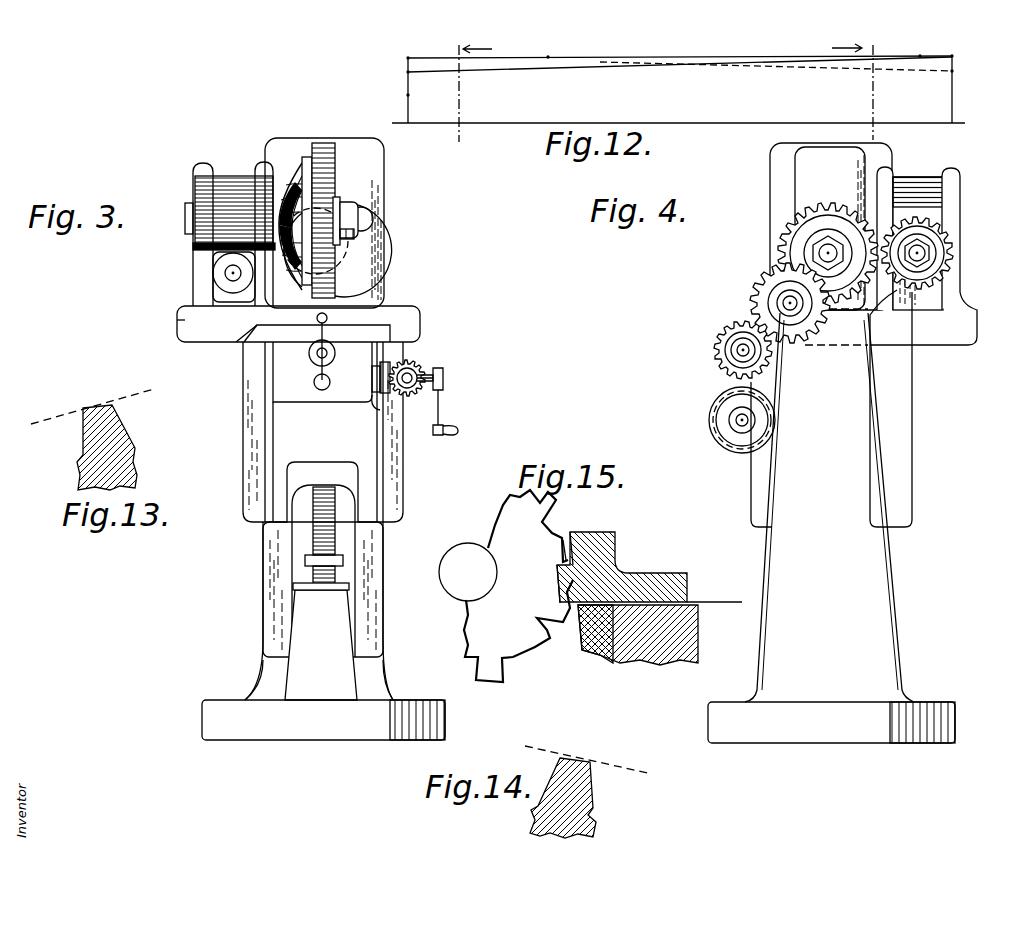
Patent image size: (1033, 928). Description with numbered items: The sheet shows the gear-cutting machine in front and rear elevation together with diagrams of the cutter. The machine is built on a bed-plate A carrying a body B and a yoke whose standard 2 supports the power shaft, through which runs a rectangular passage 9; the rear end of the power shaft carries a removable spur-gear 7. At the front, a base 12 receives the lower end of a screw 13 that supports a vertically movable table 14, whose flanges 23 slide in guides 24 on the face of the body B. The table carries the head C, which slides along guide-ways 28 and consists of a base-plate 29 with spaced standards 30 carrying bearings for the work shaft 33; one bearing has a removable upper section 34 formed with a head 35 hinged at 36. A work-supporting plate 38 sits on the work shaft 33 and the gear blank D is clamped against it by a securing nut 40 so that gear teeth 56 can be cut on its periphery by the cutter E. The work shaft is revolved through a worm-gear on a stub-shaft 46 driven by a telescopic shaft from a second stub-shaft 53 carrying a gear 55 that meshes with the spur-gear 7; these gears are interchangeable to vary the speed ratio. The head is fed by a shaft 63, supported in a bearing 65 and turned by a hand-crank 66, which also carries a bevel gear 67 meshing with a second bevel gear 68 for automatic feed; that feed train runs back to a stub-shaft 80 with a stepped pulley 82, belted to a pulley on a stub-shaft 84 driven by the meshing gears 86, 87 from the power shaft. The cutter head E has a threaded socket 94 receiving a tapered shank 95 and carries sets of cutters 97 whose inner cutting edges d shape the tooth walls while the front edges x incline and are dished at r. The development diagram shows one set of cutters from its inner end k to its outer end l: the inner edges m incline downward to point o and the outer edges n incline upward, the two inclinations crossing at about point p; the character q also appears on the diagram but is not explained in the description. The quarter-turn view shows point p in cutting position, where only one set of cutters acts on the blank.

In FIG. 4, the standard 2 is at (800, 172).
In FIG. 4, the removable spur-gear 7 is at (832, 238).
In FIG. 15, the passage 9 is at (563, 545).
In FIG. 3, the base 12 is at (300, 626).
In FIG. 3, the screw 13 is at (315, 535).
In FIG. 12, the screw 13 is at (468, 91).
In FIG. 3, the vertically movable table 14 is at (313, 357).
In FIG. 12, the vertically movable table 14 is at (866, 84).
In FIG. 3, the flanges 23 is at (395, 478).
In FIG. 4, the flanges 23 is at (905, 385).
In FIG. 3, the guides 24 is at (385, 570).
In FIG. 3, the guide-ways 28 is at (252, 336).
In FIG. 3, the base-plate 29 is at (400, 313).
In FIG. 3, the spaced standards 30 is at (262, 168).
In FIG. 4, the spaced standards 30 is at (890, 172).
In FIG. 3, the work shaft 33 is at (187, 222).
In FIG. 3, the removable upper section 34 is at (199, 187).
In FIG. 4, the removable upper section 34 is at (948, 172).
In FIG. 3, the head 35 is at (236, 209).
In FIG. 4, the head 35 is at (925, 200).
In FIG. 3, the hinge 36 is at (214, 246).
In FIG. 3, the work-supporting plate 38 is at (306, 158).
In FIG. 3, the securing nut 40 is at (352, 222).
In FIG. 3, the stub-shaft 46 is at (233, 273).
In FIG. 4, the second stub-shaft 53 is at (920, 254).
In FIG. 4, the gear 55 is at (946, 246).
In FIG. 3, the gear teeth 56 is at (335, 188).
In FIG. 3, the shaft 63 is at (421, 392).
In FIG. 3, the bearing 65 is at (372, 404).
In FIG. 3, the hand-crank 66 is at (444, 400).
In FIG. 3, the bevel gear 67 is at (400, 366).
In FIG. 3, the second bevel gear 68 is at (422, 374).
In FIG. 4, the stub-shaft 80 is at (742, 420).
In FIG. 4, the stepped pulley 82 is at (716, 430).
In FIG. 4, the stub-shaft 84 is at (745, 352).
In FIG. 4, the gear 86 is at (737, 340).
In FIG. 4, the gear 87 is at (772, 290).
In FIG. 15, the interiorly threaded socket 94 is at (690, 600).
In FIG. 15, the tapered shank 95 is at (655, 635).
In FIG. 15, the set of cutters 97 is at (600, 575).
In FIG. 3, the bed-plate A is at (405, 715).
In FIG. 4, the bed-plate A is at (905, 712).
In FIG. 3, the body B is at (380, 665).
In FIG. 4, the body B is at (880, 602).
In FIG. 3, the head C is at (170, 326).
In FIG. 4, the head C is at (984, 334).
In FIG. 3, the gear blank D is at (335, 150).
In FIG. 15, the gear blank D is at (518, 586).
In FIG. 3, the cutter head E is at (362, 262).
In FIG. 15, the inner cutting edges d is at (565, 590).
In FIG. 15, the front edges x is at (556, 580).
In FIG. 13, the dished arc r is at (90, 408).
In FIG. 14, the dished arc r is at (568, 758).
In FIG. 12, the reference line q is at (540, 58).
In FIG. 13, the reference line q is at (112, 405).
In FIG. 14, the reference line q is at (591, 762).
In FIG. 12, the crossing point p is at (635, 66).
In FIG. 12, the outer end l is at (953, 71).
In FIG. 12, the inner edges m is at (402, 44).
In FIG. 12, the outer edges n is at (412, 73).
In FIG. 12, the inner end k is at (397, 91).
In FIG. 12, the point o is at (955, 56).